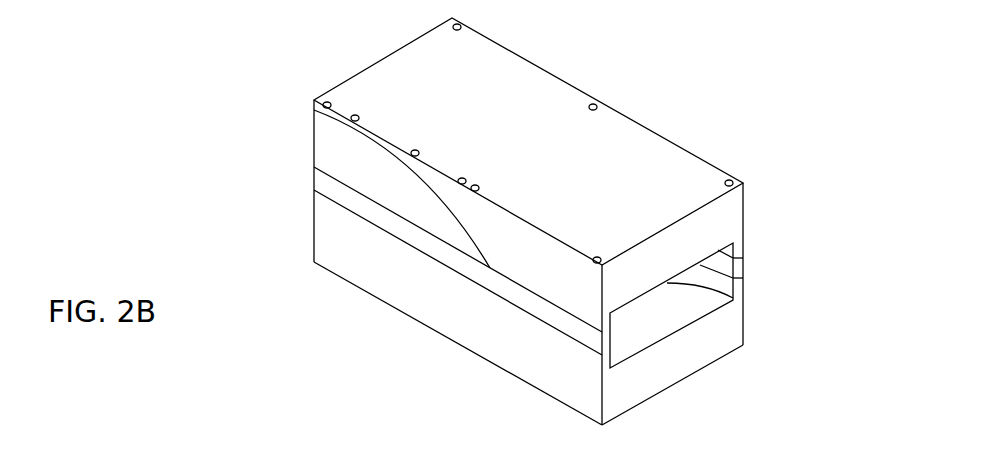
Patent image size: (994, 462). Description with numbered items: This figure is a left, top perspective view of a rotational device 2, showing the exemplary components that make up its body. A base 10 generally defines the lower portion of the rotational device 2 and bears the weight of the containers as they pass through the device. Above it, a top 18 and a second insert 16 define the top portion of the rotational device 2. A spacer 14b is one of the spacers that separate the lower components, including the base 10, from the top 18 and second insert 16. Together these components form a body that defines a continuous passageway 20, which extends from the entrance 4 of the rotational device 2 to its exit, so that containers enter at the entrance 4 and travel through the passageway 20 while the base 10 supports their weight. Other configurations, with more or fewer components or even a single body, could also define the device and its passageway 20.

The rotational device 2 is at (766, 104).
The entrance 4 is at (697, 300).
The base 10 is at (497, 330).
The spacer 14b is at (387, 225).
The second insert 16 is at (338, 160).
The top 18 is at (378, 83).
The passageway 20 is at (647, 329).